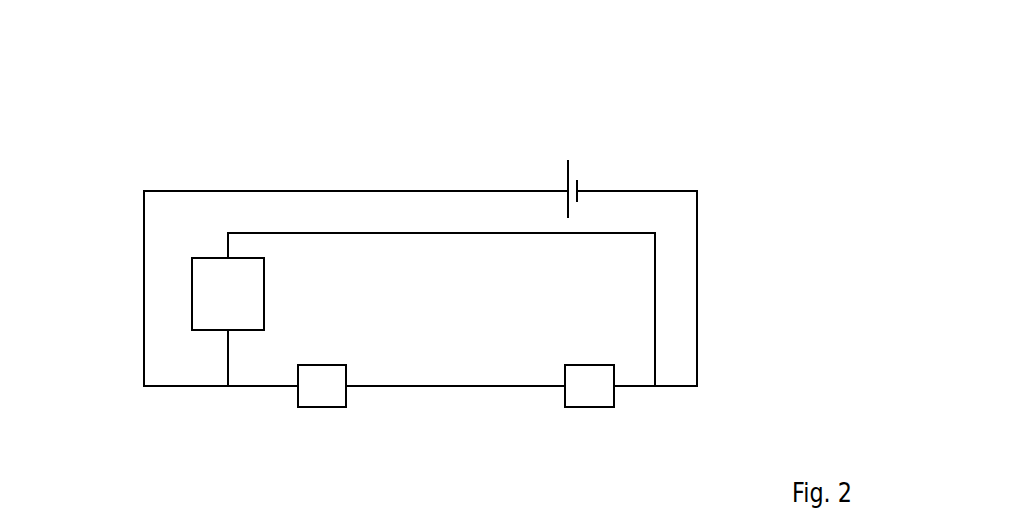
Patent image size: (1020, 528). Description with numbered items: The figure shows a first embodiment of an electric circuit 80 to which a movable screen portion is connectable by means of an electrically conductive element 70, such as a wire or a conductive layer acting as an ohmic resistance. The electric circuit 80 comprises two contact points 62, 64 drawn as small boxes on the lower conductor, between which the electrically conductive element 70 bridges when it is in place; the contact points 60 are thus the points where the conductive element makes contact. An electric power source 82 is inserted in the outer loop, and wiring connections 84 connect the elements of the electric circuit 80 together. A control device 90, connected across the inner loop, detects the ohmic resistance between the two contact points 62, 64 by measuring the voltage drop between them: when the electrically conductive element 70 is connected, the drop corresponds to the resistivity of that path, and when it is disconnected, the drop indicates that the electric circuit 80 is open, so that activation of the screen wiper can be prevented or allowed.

The electric circuit 80 is at (237, 148).
The electric power source 82 is at (567, 176).
The wiring connections 84 is at (698, 288).
The control device 90 is at (244, 307).
The electrically conductive element 70 is at (455, 387).
The sensors 60 is at (465, 434).
The first contact point 62 is at (322, 407).
The second contact point 64 is at (590, 407).